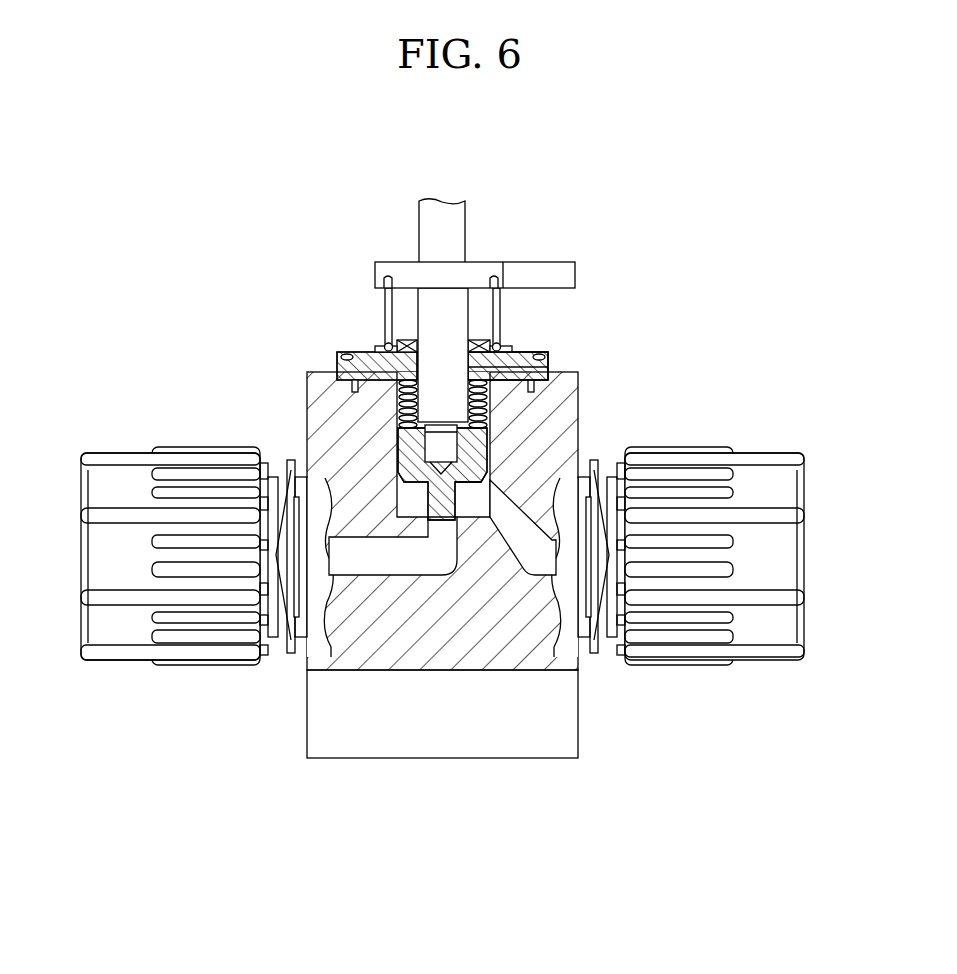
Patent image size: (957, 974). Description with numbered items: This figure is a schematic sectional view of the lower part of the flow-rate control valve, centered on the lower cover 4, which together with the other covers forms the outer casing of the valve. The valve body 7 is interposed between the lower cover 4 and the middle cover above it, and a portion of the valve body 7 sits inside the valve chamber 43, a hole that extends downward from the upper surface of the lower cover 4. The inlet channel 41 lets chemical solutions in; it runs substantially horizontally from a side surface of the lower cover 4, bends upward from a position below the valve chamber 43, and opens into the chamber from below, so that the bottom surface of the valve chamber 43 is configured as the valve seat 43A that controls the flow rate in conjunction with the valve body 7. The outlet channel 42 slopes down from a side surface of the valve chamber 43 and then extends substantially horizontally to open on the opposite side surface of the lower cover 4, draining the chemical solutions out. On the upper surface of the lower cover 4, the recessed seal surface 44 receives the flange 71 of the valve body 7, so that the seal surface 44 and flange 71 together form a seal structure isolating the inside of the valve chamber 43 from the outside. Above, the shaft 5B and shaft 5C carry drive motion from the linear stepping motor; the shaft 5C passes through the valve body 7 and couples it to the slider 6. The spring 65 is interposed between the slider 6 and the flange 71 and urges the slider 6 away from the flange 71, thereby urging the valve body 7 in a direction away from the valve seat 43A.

The lower cover 4 is at (442, 614).
The inlet channel 41 is at (371, 566).
The outlet channel 42 is at (543, 567).
The valve chamber 43 is at (405, 497).
The valve seat 43A is at (490, 483).
The seal surface 44 is at (357, 351).
The shaft 5B is at (425, 232).
The shaft 5C is at (418, 322).
The slider 6 is at (483, 260).
The spring 65 is at (500, 310).
The valve body 7 is at (503, 300).
The flange 71 is at (548, 363).